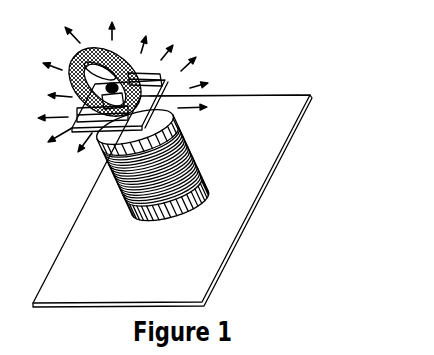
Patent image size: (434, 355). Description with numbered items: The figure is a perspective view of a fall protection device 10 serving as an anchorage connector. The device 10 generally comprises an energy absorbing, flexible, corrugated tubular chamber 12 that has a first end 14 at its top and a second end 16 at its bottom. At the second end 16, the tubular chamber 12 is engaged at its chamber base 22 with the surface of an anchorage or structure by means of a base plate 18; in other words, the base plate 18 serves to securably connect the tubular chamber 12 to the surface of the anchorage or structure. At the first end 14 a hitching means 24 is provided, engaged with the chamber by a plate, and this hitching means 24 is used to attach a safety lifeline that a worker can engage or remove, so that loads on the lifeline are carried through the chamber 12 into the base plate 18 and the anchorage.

The fall protection device 10 is at (213, 91).
The tubular chamber 12 is at (115, 175).
The first end 14 is at (168, 94).
The second end 16 is at (157, 210).
The base plate 18 is at (186, 201).
The chamber base 22 is at (220, 185).
The hitching means 24 is at (108, 50).